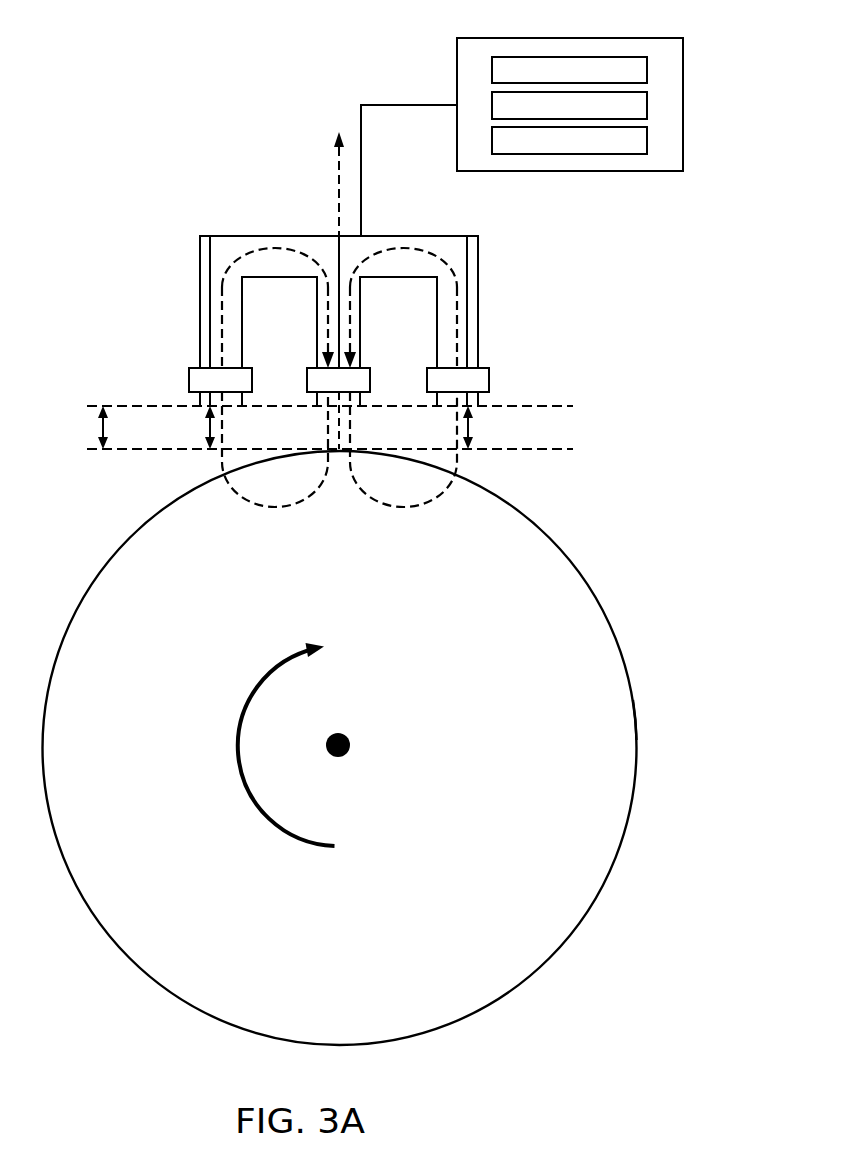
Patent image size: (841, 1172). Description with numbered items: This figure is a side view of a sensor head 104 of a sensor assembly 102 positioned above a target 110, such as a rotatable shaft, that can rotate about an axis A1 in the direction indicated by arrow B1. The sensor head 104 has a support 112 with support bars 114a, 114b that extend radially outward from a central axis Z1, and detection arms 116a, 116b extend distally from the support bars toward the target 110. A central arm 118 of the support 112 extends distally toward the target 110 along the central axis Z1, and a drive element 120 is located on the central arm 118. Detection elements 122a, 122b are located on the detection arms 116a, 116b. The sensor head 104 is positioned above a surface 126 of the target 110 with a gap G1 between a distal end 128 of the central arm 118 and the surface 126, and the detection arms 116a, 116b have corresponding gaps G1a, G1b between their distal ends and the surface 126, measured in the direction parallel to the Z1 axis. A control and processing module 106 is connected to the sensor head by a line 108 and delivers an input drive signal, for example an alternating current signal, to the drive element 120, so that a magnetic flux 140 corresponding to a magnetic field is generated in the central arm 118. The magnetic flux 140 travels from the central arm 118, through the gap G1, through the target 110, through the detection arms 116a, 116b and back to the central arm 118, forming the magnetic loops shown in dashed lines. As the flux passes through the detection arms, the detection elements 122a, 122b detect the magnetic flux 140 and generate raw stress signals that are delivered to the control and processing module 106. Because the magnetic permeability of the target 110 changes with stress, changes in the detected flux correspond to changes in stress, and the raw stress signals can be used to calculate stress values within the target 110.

The sensor assembly 102 is at (160, 218).
The sensor head 104 is at (498, 249).
The control and processing module 106 is at (635, 173).
The connection lead 108 is at (407, 103).
The target 110 is at (606, 566).
The support 112 is at (313, 247).
The support bar 114a is at (420, 242).
The support bar 114b is at (235, 245).
The detection arm 116a is at (479, 305).
The detection arm 116b is at (200, 303).
The central arm 118 is at (314, 303).
The drive element 120 is at (369, 366).
The detection element 122a is at (490, 380).
The detection element 122b is at (188, 377).
The surface 126 is at (634, 708).
The distal end 128 is at (353, 410).
The magnetic flux 140 is at (325, 338).
The central axis Z1 is at (339, 166).
The gap G1 is at (100, 427).
The gap G1a is at (473, 427).
The gap G1b is at (207, 427).
The axis A1 is at (352, 744).
The arrow B1 is at (308, 645).